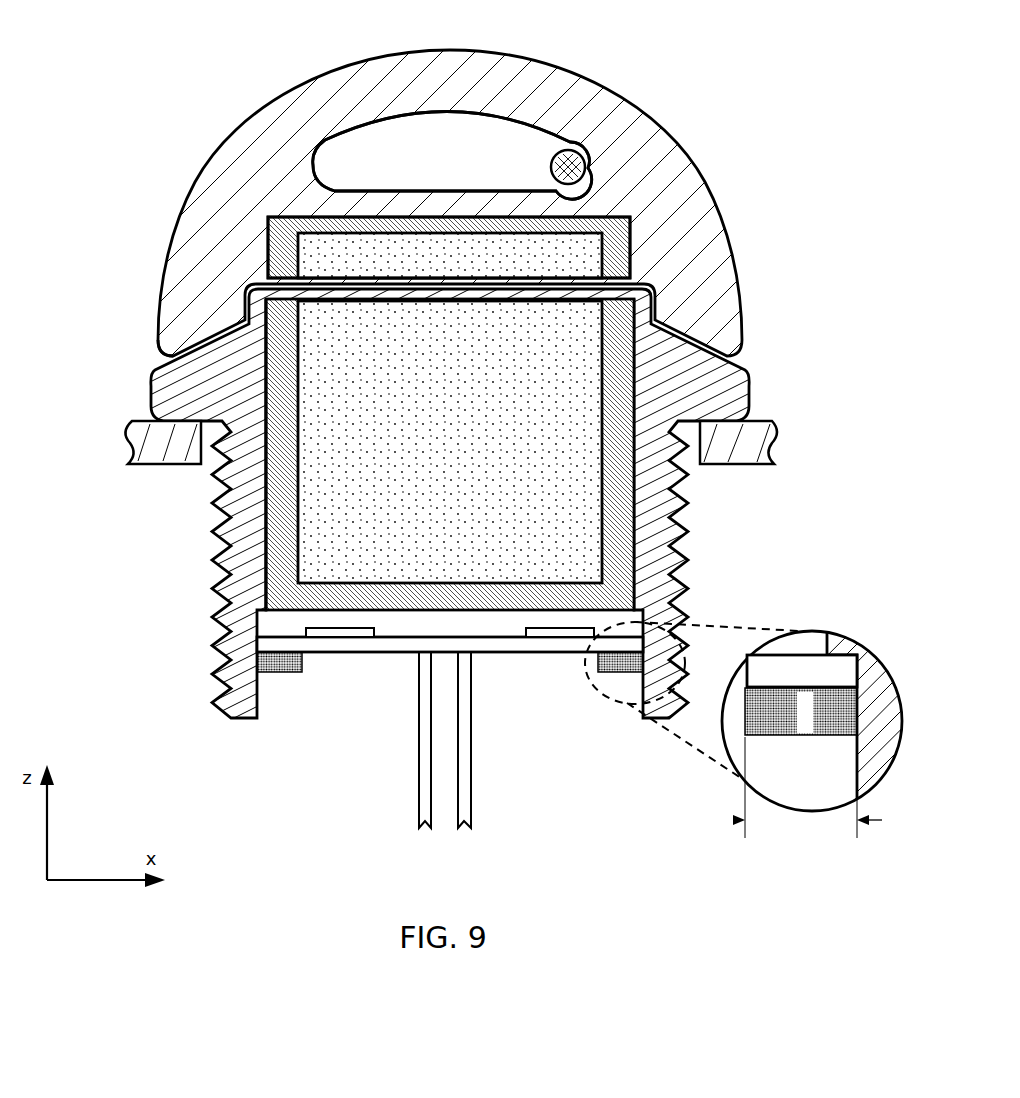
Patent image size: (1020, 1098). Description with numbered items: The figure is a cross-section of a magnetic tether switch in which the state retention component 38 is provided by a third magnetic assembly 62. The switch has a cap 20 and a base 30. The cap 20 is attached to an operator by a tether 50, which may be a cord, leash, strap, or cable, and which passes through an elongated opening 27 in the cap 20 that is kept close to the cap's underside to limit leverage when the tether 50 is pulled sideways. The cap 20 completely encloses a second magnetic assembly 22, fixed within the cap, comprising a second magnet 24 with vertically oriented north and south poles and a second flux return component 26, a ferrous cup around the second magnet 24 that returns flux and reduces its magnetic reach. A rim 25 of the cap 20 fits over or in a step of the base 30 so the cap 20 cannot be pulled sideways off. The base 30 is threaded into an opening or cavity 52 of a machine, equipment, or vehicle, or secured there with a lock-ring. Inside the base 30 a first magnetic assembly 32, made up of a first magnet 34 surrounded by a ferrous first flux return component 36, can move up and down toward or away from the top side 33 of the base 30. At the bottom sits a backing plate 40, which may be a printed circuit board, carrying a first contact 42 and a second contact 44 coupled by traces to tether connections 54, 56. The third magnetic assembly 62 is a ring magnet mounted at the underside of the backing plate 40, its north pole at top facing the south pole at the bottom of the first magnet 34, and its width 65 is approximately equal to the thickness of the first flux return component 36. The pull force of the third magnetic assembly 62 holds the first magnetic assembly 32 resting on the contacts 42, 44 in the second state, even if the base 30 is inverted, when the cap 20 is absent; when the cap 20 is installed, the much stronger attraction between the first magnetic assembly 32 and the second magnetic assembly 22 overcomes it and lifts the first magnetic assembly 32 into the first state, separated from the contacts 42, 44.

The cap 20 is at (644, 113).
The second magnetic assembly 22 is at (267, 230).
The second magnet 24 is at (350, 233).
The rim 25 is at (152, 343).
The second flux return component 26 is at (322, 217).
The opening 27 is at (413, 110).
The base 30 is at (743, 377).
The first magnetic assembly 32 is at (258, 630).
The top side 33 is at (568, 284).
The first magnet 34 is at (295, 524).
The first flux return component 36 is at (265, 565).
The state retention component 38 is at (280, 673).
The backing plate 40 is at (488, 645).
The first contact 42 is at (340, 637).
The second contact 44 is at (553, 638).
The tether 50 is at (566, 152).
The opening or cavity 52 is at (195, 466).
The tether connection 54 is at (419, 750).
The tether connection 56 is at (473, 762).
The third magnetic assembly 62 is at (768, 737).
The width 65 is at (735, 821).